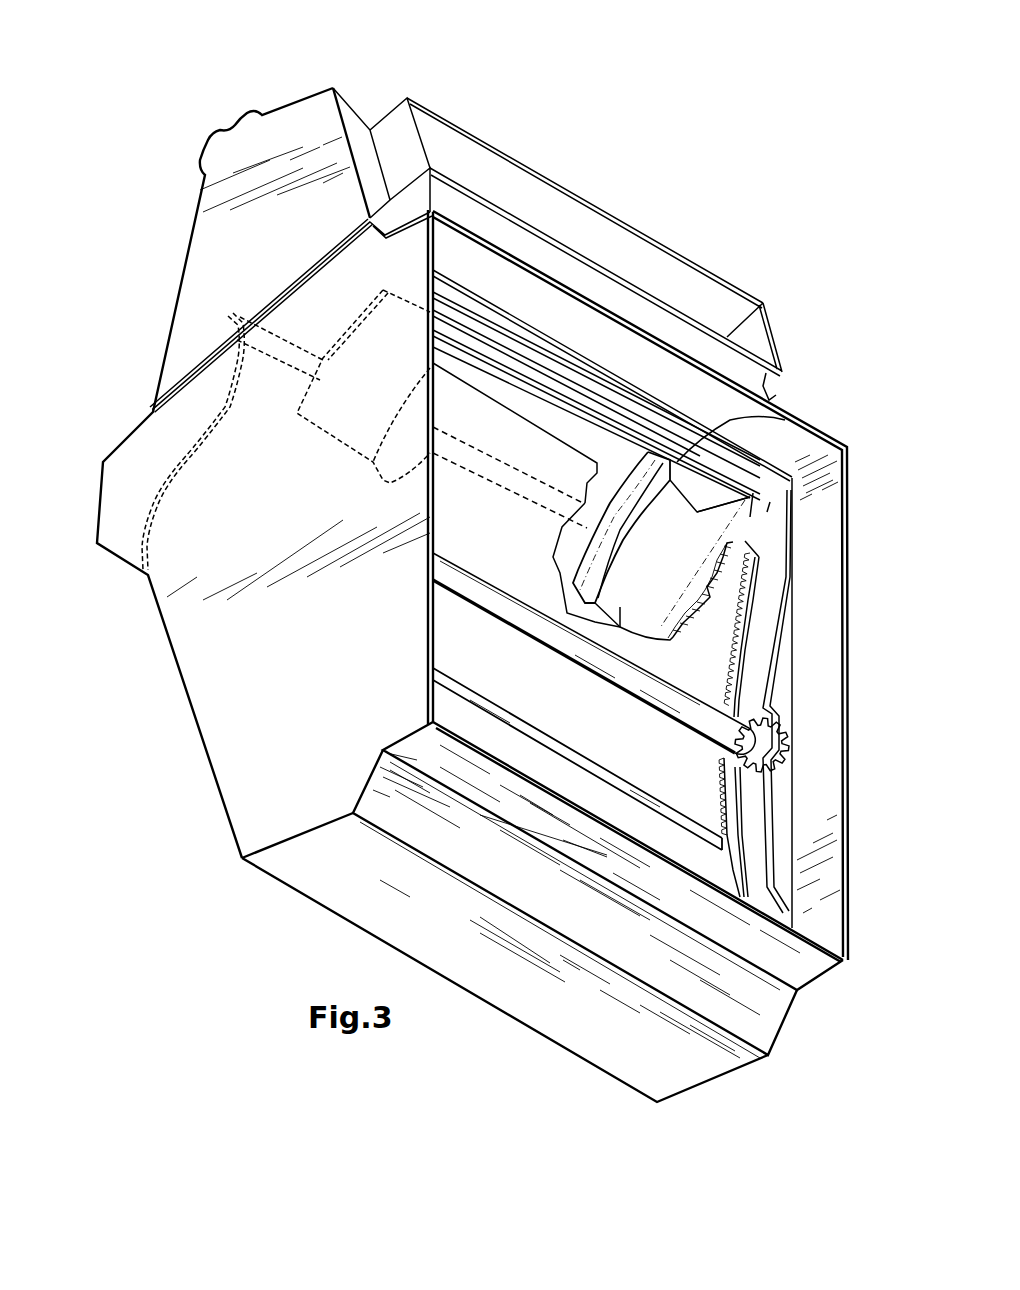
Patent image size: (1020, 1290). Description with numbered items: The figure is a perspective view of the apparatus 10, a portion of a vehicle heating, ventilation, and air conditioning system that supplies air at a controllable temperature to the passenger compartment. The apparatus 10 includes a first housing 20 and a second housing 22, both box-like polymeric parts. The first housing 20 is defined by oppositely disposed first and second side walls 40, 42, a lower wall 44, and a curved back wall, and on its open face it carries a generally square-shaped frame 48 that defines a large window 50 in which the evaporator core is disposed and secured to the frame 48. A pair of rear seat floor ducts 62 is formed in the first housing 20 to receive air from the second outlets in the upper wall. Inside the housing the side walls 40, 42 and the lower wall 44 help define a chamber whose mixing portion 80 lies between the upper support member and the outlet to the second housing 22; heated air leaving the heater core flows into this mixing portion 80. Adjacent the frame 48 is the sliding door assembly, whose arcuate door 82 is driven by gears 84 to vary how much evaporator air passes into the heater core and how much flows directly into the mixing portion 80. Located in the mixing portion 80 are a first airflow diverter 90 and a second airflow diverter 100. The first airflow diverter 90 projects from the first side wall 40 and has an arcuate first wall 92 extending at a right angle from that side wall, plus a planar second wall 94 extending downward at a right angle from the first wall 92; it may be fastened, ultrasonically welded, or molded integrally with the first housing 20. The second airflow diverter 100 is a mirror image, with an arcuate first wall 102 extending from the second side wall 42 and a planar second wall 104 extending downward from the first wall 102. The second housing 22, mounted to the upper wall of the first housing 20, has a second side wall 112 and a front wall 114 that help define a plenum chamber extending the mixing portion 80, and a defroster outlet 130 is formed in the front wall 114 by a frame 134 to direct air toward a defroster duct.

The apparatus 10 is at (479, 567).
The first housing 20 is at (253, 432).
The second housing 22 is at (308, 84).
The first side wall 40 is at (562, 611).
The second side wall 42 is at (303, 733).
The lower wall 44 is at (673, 1050).
The frame 48 is at (822, 518).
The window 50 is at (800, 684).
The rear seat floor ducts 62 is at (148, 453).
The mixing portion 80 is at (560, 419).
The arcuate door 82 is at (703, 800).
The gears 84 is at (768, 755).
The first airflow diverter 90 is at (637, 455).
The first wall 92 is at (700, 512).
The second wall 94 is at (780, 418).
The second airflow diverter 100 is at (455, 362).
The first wall 102 is at (463, 353).
The second wall 104 is at (480, 352).
The second side wall 112 is at (207, 287).
The front wall 114 is at (345, 100).
The defroster outlet 130 is at (433, 137).
The frame 134 is at (393, 125).